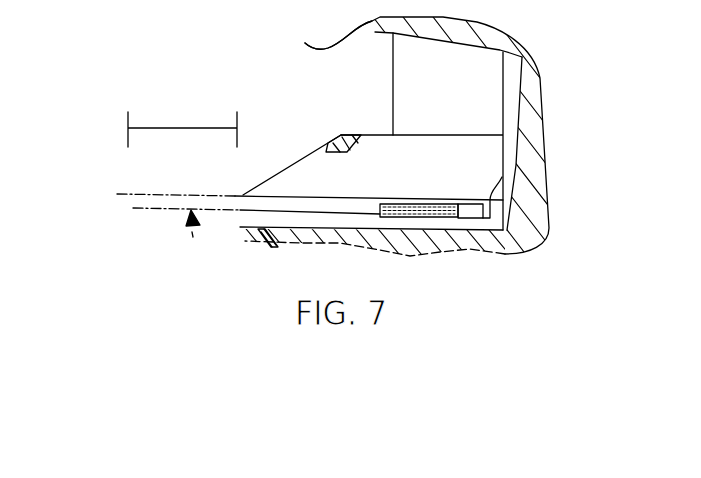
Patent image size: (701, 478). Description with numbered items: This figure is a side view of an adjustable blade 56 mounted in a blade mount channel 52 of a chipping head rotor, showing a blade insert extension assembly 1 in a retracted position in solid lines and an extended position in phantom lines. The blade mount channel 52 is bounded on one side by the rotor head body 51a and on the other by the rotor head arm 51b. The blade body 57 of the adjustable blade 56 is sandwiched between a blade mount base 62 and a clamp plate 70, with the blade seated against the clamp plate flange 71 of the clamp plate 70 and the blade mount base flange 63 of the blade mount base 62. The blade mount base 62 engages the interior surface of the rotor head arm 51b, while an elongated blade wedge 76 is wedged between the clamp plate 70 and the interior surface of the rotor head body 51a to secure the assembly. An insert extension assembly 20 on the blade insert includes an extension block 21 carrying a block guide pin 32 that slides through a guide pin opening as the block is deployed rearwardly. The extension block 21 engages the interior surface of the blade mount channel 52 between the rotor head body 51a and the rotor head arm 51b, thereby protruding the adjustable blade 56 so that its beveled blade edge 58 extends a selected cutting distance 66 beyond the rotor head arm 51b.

The blade insert extension assembly 1 is at (440, 242).
The insert extension assembly 20 is at (475, 242).
The extension block 21 is at (465, 203).
The block guide pin 32 is at (422, 201).
The rotor head body 51a is at (309, 38).
The rotor head arm 51b is at (272, 243).
The blade mount channel 52 is at (296, 116).
The adjustable blade 56 is at (226, 228).
The blade body 57 is at (288, 206).
The blade edge 58 is at (270, 248).
The blade mount base 62 is at (363, 245).
The blade mount base flange 63 is at (522, 211).
The cutting distance 66 is at (208, 128).
The clamp plate 70 is at (500, 130).
The clamp plate flange 71 is at (507, 175).
The blade wedge 76 is at (404, 81).